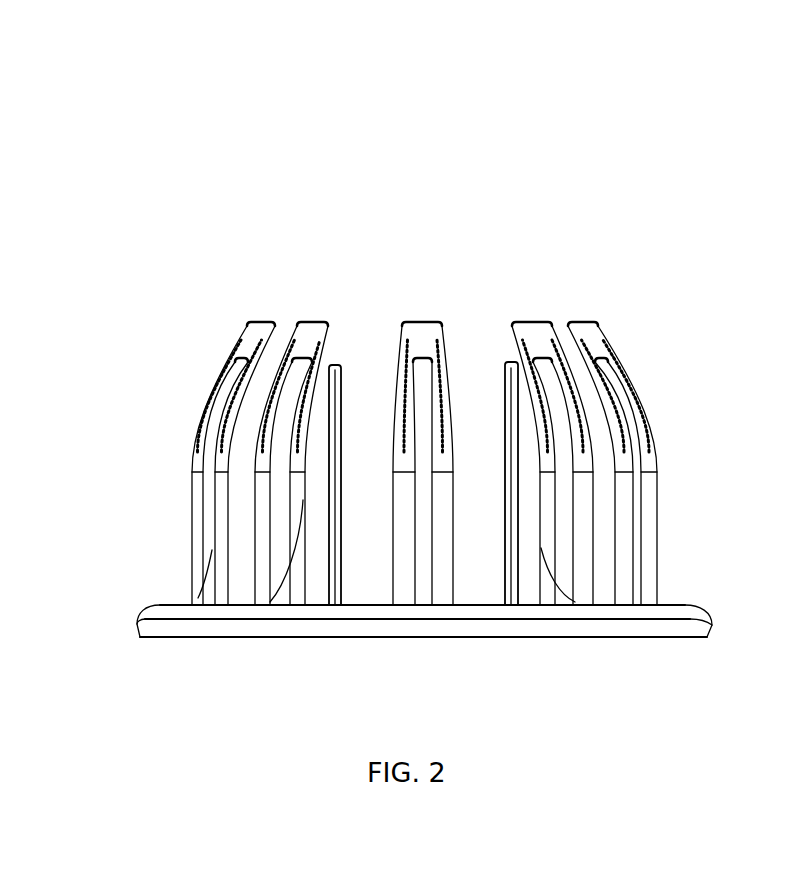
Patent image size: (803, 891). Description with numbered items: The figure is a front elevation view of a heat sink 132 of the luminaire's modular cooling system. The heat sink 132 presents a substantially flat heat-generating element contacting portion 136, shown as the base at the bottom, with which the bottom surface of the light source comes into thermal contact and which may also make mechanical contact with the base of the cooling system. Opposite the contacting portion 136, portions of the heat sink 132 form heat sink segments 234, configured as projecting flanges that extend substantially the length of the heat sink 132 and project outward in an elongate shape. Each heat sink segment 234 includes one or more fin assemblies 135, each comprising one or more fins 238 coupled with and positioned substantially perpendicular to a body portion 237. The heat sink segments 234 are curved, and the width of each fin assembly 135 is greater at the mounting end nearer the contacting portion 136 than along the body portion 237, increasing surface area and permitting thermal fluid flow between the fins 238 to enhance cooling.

The heat sink 132 is at (235, 60).
The fin assembly 135 is at (311, 334).
The heat-generating element contacting portion 136 is at (200, 625).
The heat sink segment 234 is at (437, 299).
The body portion 237 is at (341, 385).
The fin 238 is at (295, 533).